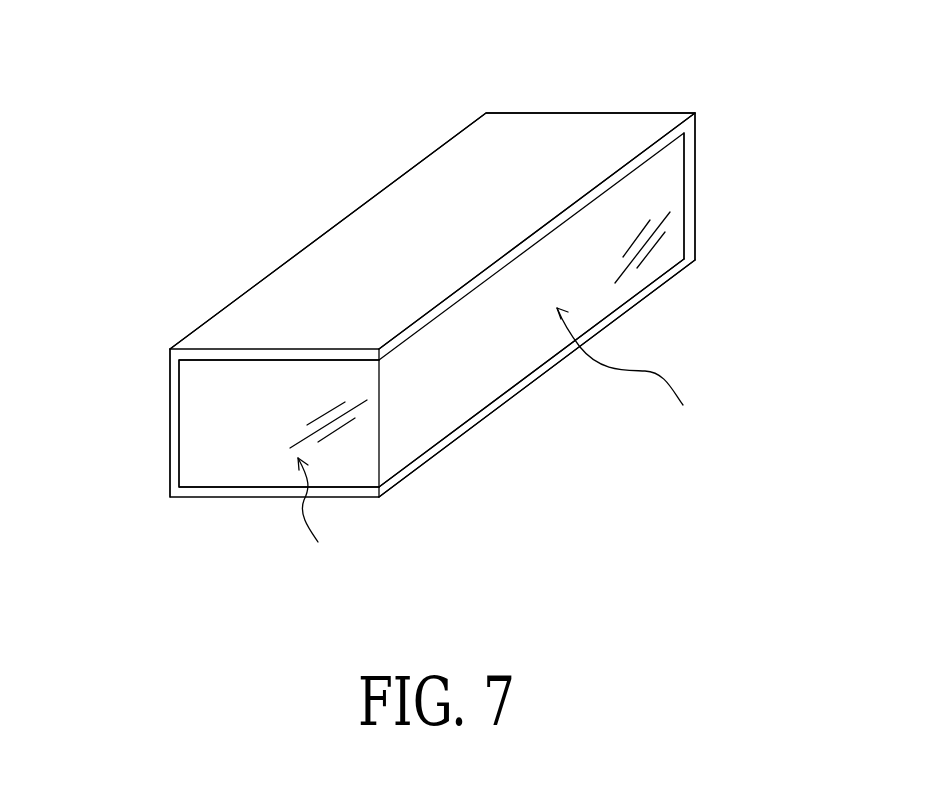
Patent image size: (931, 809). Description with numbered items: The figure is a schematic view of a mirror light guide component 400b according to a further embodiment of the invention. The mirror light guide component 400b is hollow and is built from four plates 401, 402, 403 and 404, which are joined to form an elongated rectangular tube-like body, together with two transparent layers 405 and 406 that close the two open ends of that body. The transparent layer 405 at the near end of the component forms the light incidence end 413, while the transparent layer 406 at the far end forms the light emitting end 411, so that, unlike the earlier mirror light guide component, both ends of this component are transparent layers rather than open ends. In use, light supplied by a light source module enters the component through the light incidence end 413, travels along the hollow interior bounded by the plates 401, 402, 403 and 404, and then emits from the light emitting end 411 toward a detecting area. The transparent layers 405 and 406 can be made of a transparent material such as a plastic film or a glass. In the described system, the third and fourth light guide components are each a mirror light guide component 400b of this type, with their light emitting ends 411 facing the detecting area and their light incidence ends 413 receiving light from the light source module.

The mirror light guide component 400b is at (705, 535).
The plate 401 is at (595, 127).
The plate 402 is at (173, 450).
The plate 403 is at (490, 407).
The plate 404 is at (688, 193).
The transparent layer 405 is at (237, 467).
The transparent layer 406 is at (650, 275).
The light emitting end 411 is at (642, 371).
The light incidence end 413 is at (331, 511).